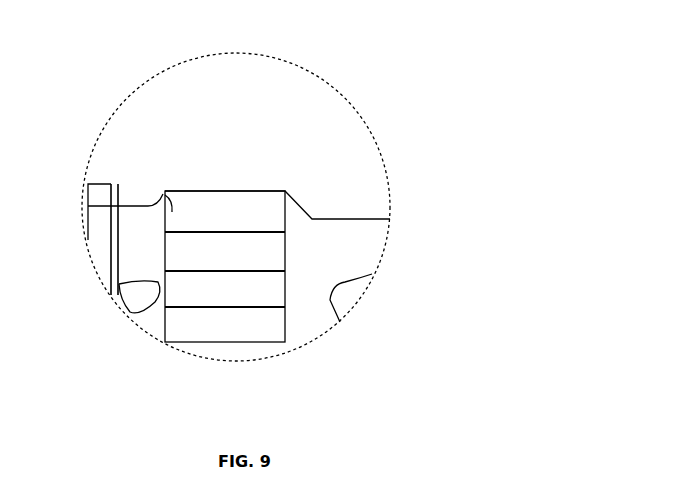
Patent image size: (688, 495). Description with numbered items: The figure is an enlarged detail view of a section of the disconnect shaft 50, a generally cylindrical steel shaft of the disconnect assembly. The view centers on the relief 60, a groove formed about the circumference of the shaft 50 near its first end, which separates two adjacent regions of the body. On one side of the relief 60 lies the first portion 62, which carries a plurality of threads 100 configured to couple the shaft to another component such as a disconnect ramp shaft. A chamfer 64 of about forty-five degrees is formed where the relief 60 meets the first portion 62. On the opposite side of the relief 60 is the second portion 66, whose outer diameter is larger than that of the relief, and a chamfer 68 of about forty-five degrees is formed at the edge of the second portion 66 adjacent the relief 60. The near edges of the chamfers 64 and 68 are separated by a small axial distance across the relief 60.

The disconnect shaft 50 is at (364, 45).
The relief 60 is at (111, 208).
The first portion 62 is at (240, 191).
The chamfer 64 is at (172, 212).
The second portion 66 is at (152, 203).
The chamfer 68 is at (90, 186).
The plurality of threads 100 is at (333, 253).